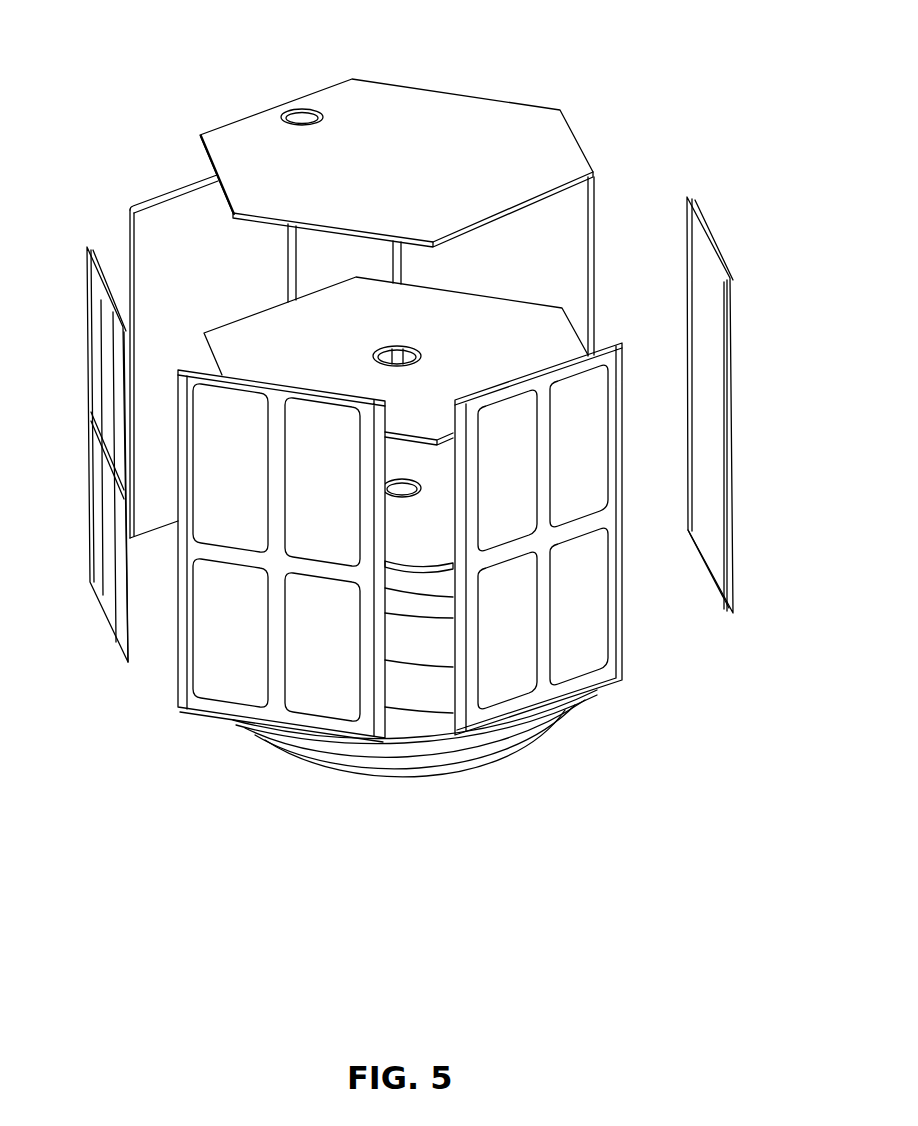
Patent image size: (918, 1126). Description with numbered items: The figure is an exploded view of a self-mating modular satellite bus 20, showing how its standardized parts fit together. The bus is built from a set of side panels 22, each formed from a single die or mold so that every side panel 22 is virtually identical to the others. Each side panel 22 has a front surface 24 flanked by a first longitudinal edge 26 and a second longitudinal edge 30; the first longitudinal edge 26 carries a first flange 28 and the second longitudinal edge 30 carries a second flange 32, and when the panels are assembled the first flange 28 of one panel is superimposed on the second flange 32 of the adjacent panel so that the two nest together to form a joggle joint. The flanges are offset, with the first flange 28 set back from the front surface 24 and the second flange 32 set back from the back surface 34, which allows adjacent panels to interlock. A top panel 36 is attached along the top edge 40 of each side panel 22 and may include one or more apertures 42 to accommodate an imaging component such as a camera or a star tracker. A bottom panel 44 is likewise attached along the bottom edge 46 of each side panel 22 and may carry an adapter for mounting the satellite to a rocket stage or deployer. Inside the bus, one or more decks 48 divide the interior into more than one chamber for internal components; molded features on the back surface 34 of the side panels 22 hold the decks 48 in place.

The satellite bus 20 is at (146, 33).
The side panel 22 is at (708, 233).
The front surface 24 is at (208, 653).
The first longitudinal edge 26 is at (470, 655).
The first flange 28 is at (508, 748).
The second longitudinal edge 30 is at (267, 733).
The second flange 32 is at (343, 743).
The back surface 34 is at (700, 424).
The top panel 36 is at (531, 119).
The top edge 40 is at (173, 183).
The aperture 42 is at (283, 115).
The bottom panel 44 is at (387, 743).
The bottom edge 46 is at (707, 574).
The deck 48 is at (522, 328).